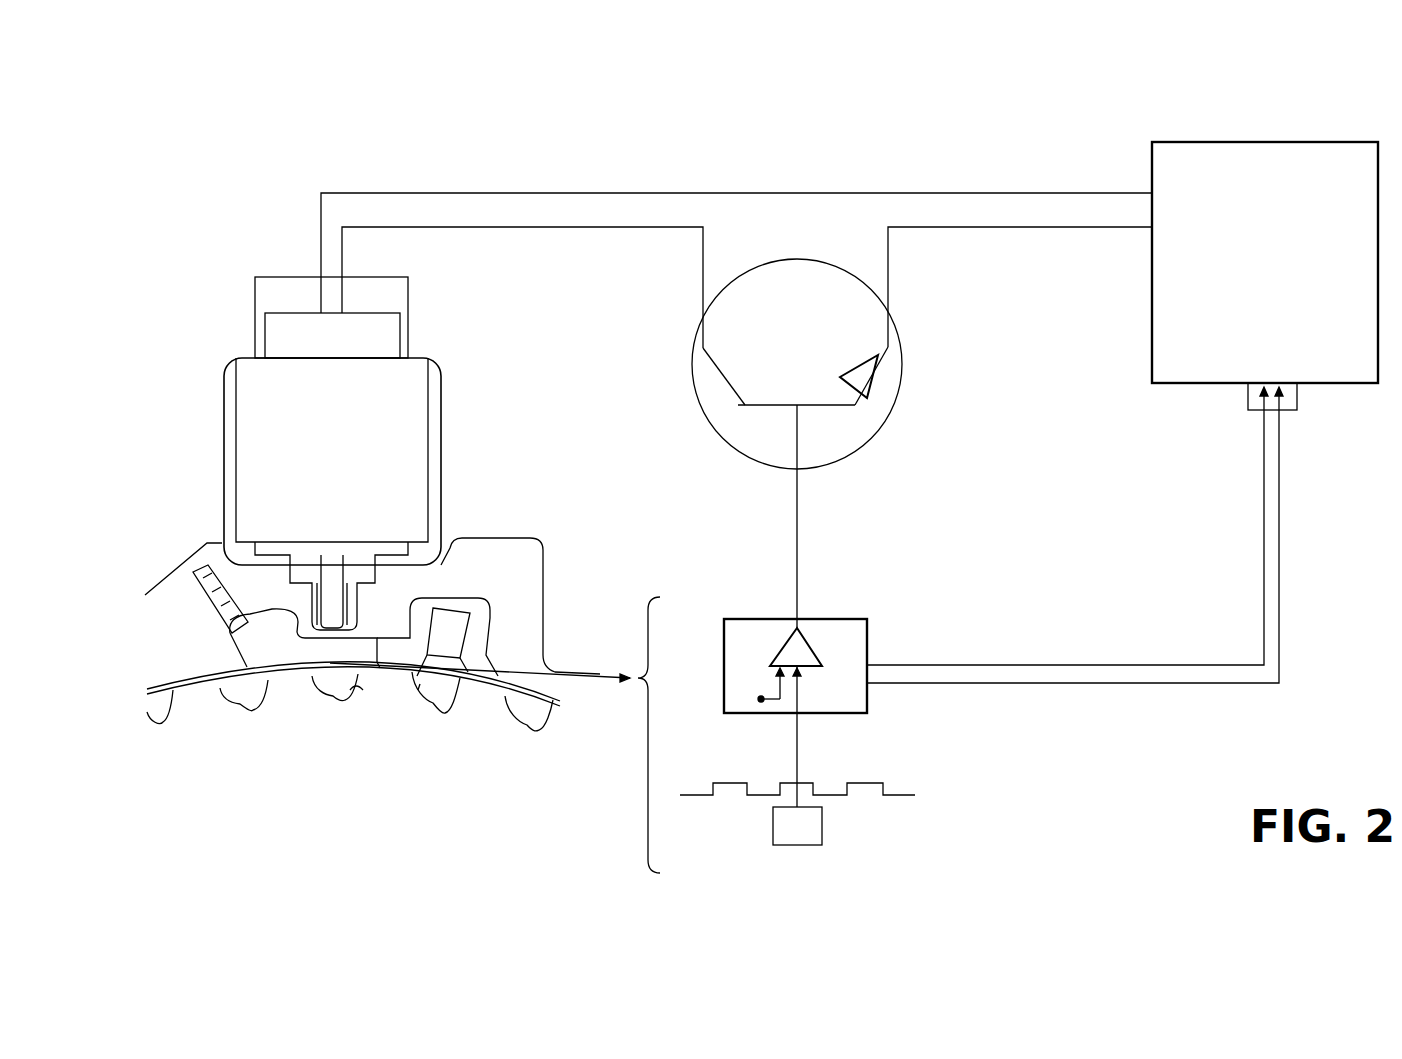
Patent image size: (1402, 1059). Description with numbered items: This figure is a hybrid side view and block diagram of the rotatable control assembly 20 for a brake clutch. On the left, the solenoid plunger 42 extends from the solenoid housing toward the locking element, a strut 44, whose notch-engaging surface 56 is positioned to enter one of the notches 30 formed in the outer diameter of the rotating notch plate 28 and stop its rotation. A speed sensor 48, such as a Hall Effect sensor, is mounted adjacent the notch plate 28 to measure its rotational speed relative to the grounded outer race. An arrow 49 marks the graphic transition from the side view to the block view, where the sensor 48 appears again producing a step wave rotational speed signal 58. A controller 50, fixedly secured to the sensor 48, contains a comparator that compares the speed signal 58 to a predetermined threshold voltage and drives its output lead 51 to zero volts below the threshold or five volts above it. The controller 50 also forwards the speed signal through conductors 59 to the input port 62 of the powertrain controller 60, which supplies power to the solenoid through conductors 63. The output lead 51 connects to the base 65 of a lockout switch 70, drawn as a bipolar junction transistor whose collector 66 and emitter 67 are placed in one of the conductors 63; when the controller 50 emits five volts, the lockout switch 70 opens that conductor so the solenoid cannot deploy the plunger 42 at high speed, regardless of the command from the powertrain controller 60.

The rotatable control assembly 20 is at (565, 95).
The notch plate 28 is at (513, 714).
The notches 30 is at (337, 703).
The solenoid plunger 42 is at (336, 604).
The locking element (strut) 44 is at (287, 662).
The speed sensor 48 is at (420, 685).
The arrow 49 is at (592, 678).
The controller 50 is at (457, 628).
The output lead 51 is at (795, 588).
The notch-engaging surface 56 is at (378, 684).
The rotational speed signal 58 is at (893, 803).
The conductors 59 is at (1266, 510).
The powertrain controller 60 is at (1293, 142).
The input port 62 is at (1298, 396).
The conductors 63 is at (1098, 227).
The base 65 is at (765, 410).
The collector 66 is at (710, 362).
The emitter 67 is at (888, 357).
The lockout switch 70 is at (697, 393).